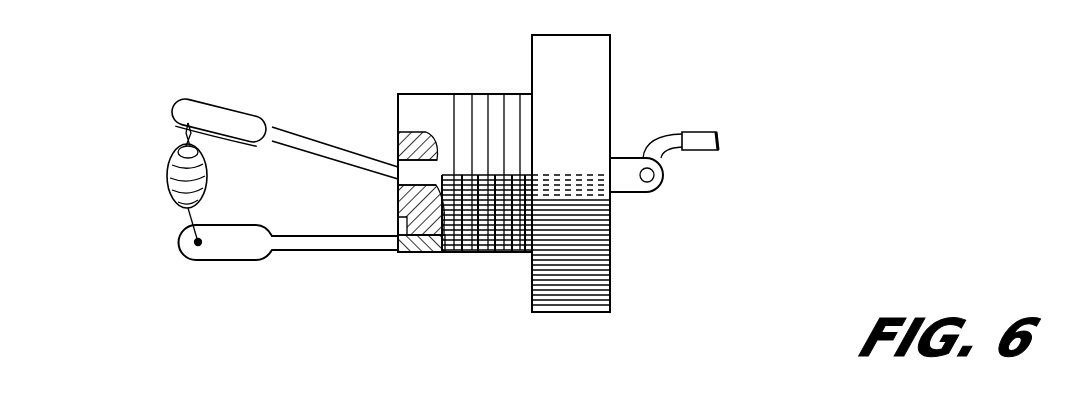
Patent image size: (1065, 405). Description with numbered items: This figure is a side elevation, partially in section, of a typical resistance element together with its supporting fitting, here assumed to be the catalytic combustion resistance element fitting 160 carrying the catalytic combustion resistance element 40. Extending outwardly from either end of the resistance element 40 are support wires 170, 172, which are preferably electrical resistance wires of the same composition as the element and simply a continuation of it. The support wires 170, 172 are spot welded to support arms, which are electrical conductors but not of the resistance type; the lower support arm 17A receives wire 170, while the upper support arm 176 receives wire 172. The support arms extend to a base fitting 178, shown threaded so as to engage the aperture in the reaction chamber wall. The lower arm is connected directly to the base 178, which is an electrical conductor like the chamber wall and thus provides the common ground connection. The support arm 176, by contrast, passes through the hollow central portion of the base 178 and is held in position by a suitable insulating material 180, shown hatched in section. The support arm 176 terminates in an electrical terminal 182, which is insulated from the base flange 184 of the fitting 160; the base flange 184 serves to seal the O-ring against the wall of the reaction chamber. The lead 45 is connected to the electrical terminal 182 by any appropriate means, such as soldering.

The support arm 176 is at (227, 108).
The support wire 172 is at (188, 130).
The catalytic combustion resistance element 40 is at (165, 168).
The support wire 170 is at (190, 218).
The lower contact arm 17A is at (243, 243).
The insulating material 180 is at (403, 200).
The base fitting 178 is at (420, 94).
The base flange 184 is at (610, 35).
The catalytic combustion resistance element fitting 160 is at (580, 106).
The lead 45 is at (707, 145).
The electrical terminal 182 is at (627, 192).